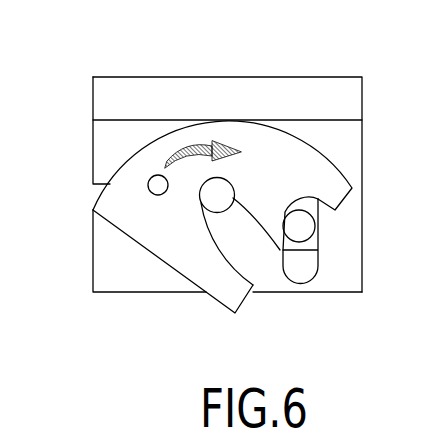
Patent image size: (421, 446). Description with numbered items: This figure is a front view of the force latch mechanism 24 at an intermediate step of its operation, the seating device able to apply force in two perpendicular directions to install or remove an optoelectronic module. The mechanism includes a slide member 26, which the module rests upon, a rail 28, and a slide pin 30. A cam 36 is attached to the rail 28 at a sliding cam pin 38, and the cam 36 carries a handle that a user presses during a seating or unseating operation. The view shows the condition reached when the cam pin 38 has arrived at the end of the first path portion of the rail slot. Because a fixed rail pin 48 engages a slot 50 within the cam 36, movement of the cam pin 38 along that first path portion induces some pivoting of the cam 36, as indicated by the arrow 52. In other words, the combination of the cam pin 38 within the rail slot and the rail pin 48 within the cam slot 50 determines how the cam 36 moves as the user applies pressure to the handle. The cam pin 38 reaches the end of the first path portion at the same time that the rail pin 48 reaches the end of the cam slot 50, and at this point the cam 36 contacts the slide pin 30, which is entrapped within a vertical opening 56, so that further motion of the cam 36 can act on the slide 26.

The force latch mechanism 24 is at (70, 270).
The slide member 26 is at (98, 101).
The rail 28 is at (145, 287).
The slide pin 30 is at (306, 224).
The cam 36 is at (142, 163).
The sliding cam pin 38 is at (170, 142).
The fixed rail pin 48 is at (225, 192).
The slot 50 is at (222, 240).
The arrow 52 is at (213, 142).
The vertical opening 56 is at (300, 270).